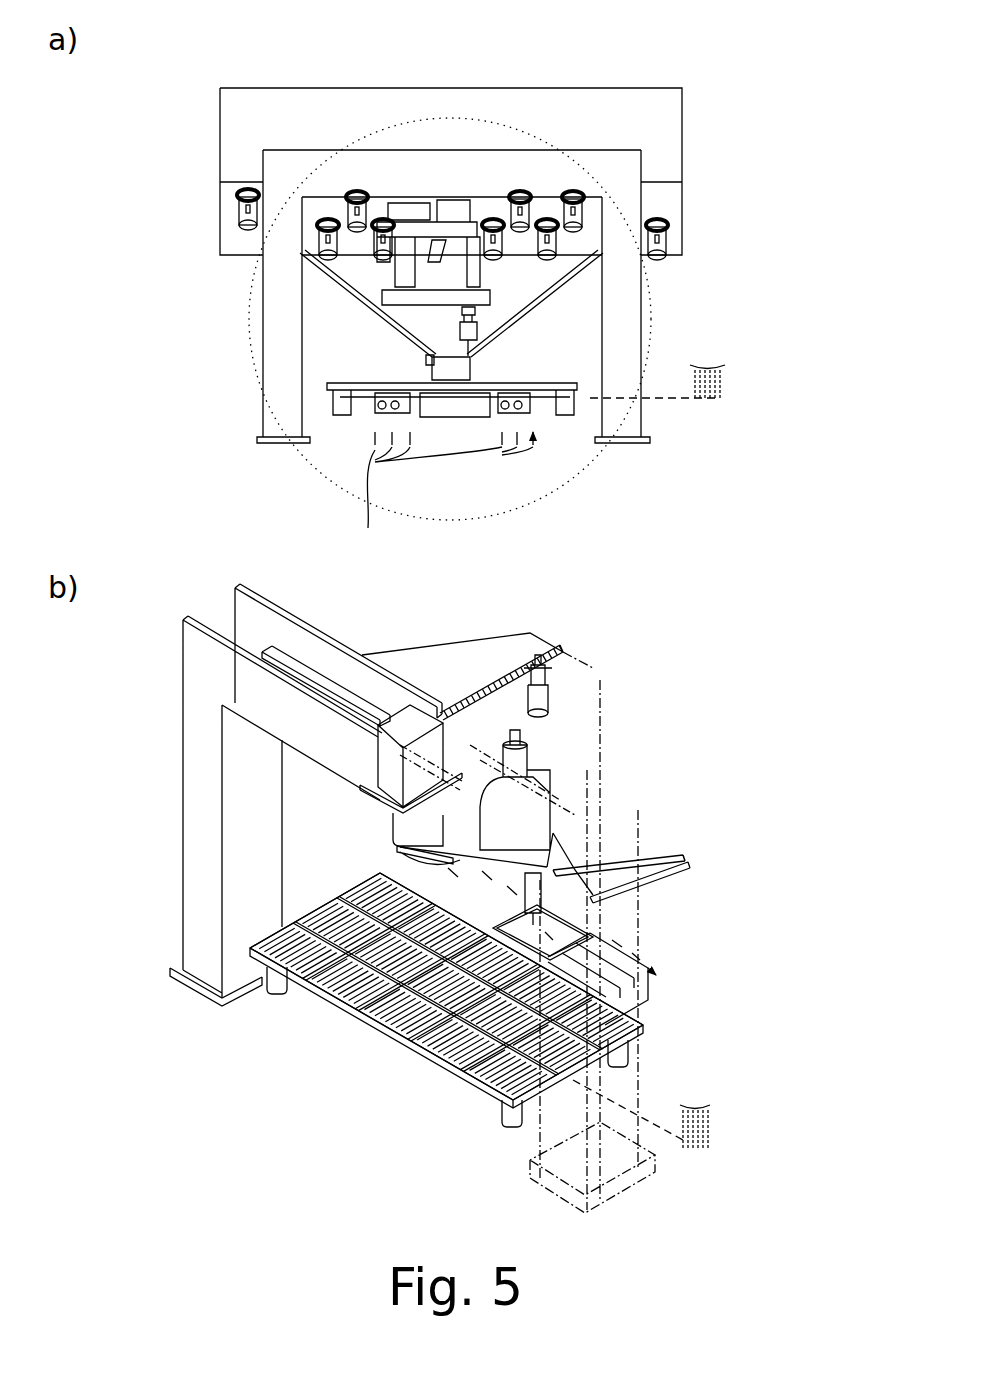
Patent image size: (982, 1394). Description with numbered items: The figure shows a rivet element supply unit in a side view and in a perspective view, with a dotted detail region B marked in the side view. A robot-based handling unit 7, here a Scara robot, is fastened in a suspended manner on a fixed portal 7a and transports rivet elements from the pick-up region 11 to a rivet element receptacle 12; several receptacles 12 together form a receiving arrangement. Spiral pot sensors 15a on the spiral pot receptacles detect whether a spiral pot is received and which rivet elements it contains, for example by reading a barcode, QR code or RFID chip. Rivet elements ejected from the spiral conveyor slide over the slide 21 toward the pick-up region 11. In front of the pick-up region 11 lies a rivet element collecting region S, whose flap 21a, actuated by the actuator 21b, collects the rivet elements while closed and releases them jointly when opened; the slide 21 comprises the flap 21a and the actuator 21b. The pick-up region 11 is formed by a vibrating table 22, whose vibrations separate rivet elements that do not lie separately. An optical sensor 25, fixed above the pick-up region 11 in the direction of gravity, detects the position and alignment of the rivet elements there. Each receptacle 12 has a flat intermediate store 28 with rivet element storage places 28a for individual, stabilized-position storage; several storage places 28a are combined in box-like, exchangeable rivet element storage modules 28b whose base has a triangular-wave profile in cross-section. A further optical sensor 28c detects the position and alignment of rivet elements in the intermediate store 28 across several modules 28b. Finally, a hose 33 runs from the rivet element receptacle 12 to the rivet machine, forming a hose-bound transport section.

The portal 7a is at (285, 178).
The handling unit 7 is at (500, 296).
The spiral pot sensor 15a is at (648, 262).
The slide 21 is at (520, 296).
The flap 21a is at (470, 363).
The actuator 21b is at (427, 362).
The rivet element collecting region S is at (445, 335).
The hose 33 is at (668, 400).
The detail region B is at (580, 482).
The rivet element receptacle 12 is at (762, 1000).
The optical sensor 25 is at (552, 703).
The sensor 28c is at (647, 807).
The pick-up region 11 is at (687, 870).
The vibrating table 22 is at (602, 932).
The intermediate store 28 is at (378, 1038).
The rivet element storage place 28a is at (317, 1013).
The rivet element storage module 28b is at (240, 1032).